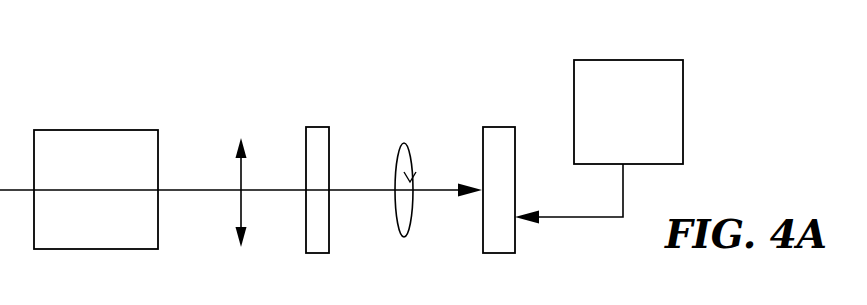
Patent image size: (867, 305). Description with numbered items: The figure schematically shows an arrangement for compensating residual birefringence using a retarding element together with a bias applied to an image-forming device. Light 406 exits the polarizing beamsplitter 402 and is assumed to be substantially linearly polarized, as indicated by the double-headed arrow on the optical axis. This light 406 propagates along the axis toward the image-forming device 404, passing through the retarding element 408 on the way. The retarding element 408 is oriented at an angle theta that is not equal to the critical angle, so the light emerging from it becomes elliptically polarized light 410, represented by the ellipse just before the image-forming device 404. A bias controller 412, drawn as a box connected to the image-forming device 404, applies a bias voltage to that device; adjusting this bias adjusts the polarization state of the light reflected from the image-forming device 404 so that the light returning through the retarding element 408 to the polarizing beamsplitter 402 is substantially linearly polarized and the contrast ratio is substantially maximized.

The polarizing beamsplitter 402 is at (87, 130).
The image-forming device 404 is at (500, 127).
The light 406 is at (199, 192).
The retarding element 408 is at (316, 127).
The elliptically polarized light 410 is at (442, 193).
The bias controller 412 is at (623, 60).